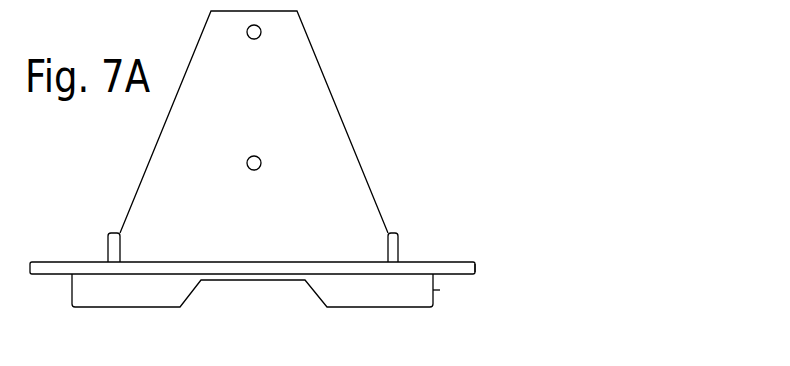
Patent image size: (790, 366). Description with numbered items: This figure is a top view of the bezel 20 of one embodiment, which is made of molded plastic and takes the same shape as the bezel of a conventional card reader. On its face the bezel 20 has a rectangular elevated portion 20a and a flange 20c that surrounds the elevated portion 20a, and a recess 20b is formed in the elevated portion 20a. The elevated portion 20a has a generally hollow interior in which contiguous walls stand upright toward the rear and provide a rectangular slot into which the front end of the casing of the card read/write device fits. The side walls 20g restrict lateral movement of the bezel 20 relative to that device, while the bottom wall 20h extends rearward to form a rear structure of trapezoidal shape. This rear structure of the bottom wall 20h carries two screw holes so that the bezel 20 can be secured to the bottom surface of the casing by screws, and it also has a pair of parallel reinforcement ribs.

The bezel 20 is at (438, 261).
The elevated portion 20a is at (435, 290).
The recess 20b is at (190, 296).
The flange 20c is at (477, 265).
The side walls 20g is at (113, 233).
The bottom wall 20h is at (328, 85).